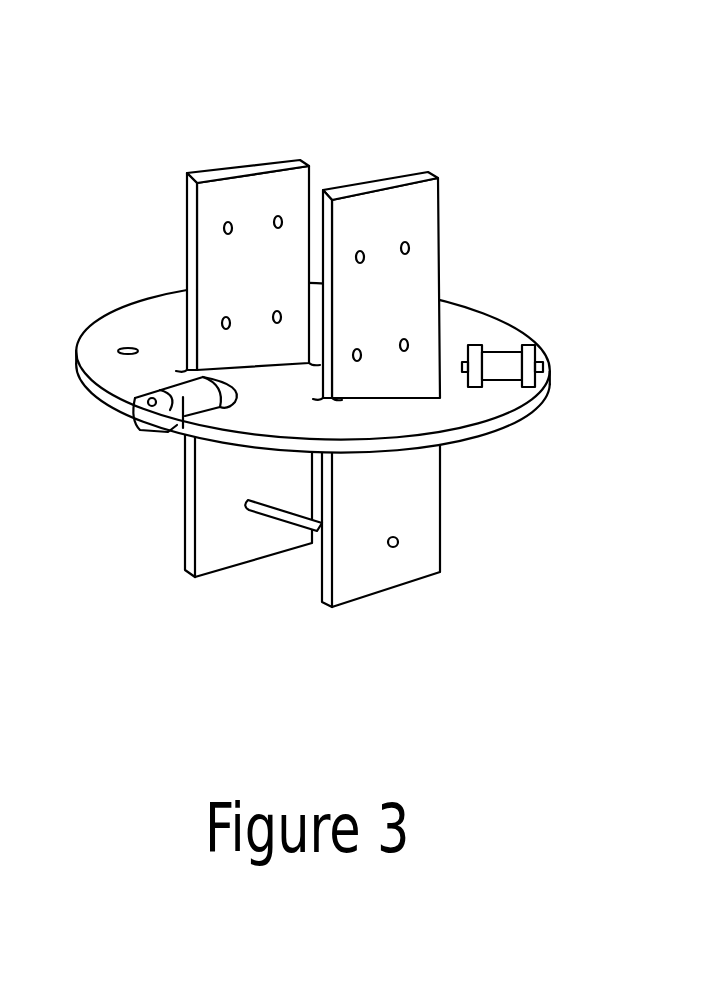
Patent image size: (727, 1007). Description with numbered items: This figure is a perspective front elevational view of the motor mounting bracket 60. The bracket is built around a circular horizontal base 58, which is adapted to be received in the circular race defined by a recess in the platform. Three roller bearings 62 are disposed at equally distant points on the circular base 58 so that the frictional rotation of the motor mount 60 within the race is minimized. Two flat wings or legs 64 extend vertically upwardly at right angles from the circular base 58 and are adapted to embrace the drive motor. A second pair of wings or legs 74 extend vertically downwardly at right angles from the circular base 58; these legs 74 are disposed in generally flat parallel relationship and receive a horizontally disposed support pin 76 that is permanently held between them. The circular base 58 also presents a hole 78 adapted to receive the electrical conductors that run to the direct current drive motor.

The circular base 58 is at (438, 415).
The motor mounting bracket 60 is at (361, 239).
The roller bearings 62 is at (182, 443).
The flat wings or legs 64 is at (388, 207).
The second pair of wings or legs 74 is at (212, 532).
The support pin 76 is at (260, 510).
The hole 78 is at (127, 355).